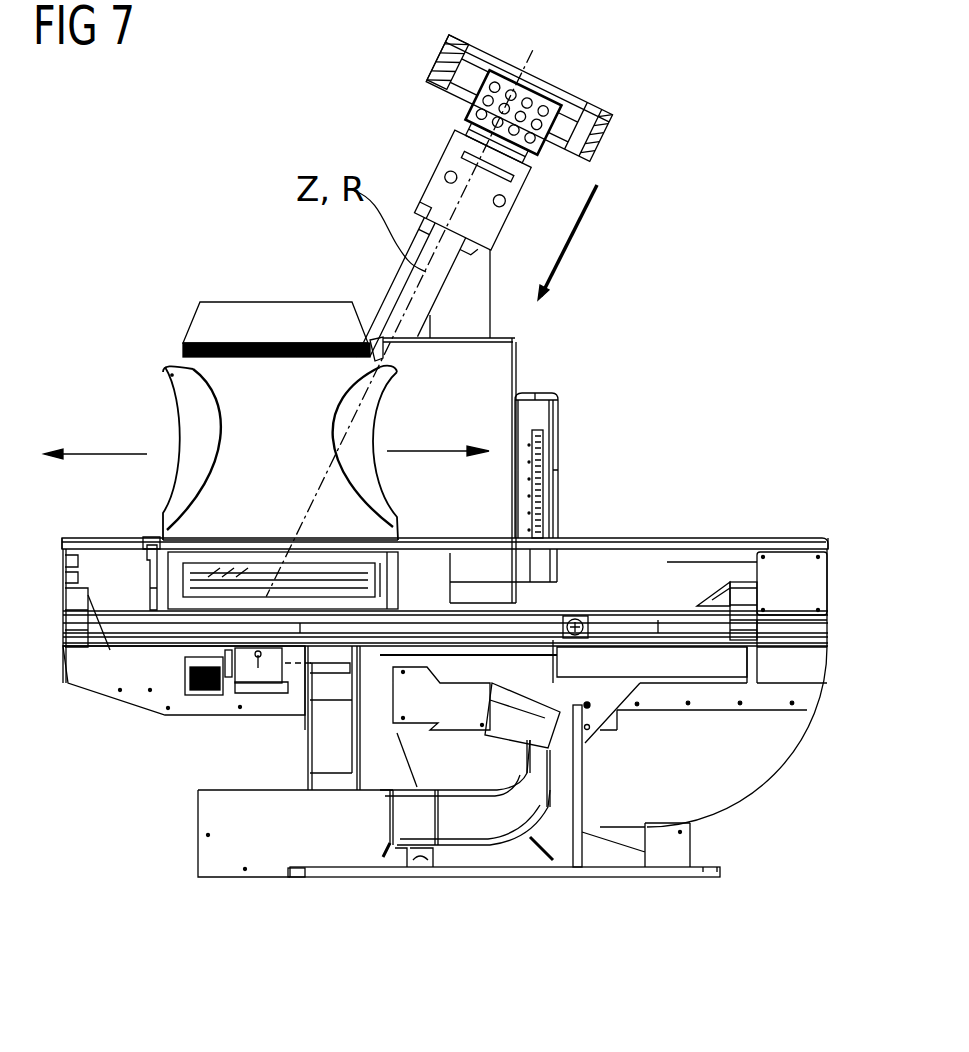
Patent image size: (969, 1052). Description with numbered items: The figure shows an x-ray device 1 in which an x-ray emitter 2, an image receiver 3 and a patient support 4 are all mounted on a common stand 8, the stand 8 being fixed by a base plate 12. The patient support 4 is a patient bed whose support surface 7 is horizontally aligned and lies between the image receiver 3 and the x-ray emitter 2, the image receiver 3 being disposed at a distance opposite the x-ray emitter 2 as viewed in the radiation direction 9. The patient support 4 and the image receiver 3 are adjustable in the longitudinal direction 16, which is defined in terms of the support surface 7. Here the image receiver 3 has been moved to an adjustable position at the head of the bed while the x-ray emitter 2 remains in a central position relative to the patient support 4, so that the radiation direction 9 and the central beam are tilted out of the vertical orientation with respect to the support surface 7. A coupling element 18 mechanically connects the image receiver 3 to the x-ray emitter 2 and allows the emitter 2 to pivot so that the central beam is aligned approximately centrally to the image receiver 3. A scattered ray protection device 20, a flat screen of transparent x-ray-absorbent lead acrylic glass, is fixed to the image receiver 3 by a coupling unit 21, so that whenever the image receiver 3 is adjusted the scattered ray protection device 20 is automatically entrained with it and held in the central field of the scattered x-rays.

The x-ray device 1 is at (732, 313).
The x-ray emitter 2 is at (578, 120).
The image receiver 3 is at (215, 597).
The patient support 4 is at (735, 537).
The support surface 7 is at (631, 534).
The stand 8 is at (733, 755).
The radiation direction 9 is at (577, 228).
The base plate 12 is at (608, 878).
The longitudinal direction 16 is at (96, 452).
The coupling element 18 is at (397, 306).
The scattered ray protection device 20 is at (187, 323).
The coupling unit 21 is at (145, 568).